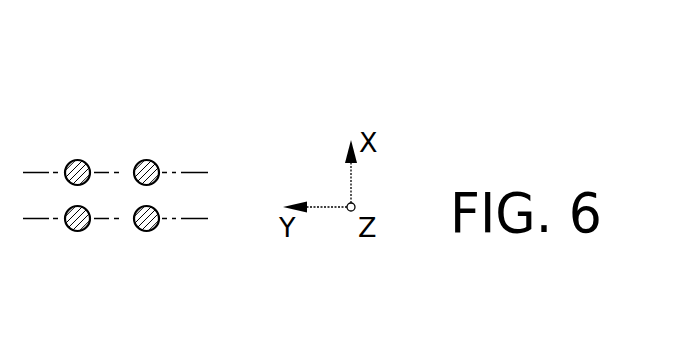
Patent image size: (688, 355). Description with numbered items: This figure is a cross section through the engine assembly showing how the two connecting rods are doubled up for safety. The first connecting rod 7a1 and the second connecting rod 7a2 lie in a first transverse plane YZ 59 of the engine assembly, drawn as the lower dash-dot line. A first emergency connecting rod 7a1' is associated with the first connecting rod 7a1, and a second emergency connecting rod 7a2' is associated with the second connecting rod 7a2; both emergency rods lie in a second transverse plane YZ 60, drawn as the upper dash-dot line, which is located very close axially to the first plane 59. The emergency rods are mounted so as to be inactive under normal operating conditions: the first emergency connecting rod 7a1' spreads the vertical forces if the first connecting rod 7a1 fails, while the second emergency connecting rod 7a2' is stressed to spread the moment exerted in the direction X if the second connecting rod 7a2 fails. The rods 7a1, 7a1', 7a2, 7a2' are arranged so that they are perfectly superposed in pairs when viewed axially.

The second emergency connecting rod 7a2' is at (106, 135).
The first emergency connecting rod 7a1' is at (178, 134).
The second transverse plane YZ 60 is at (200, 171).
The second connecting rod 7a2 is at (83, 257).
The first connecting rod 7a1 is at (156, 257).
The first transverse plane YZ 59 is at (203, 220).